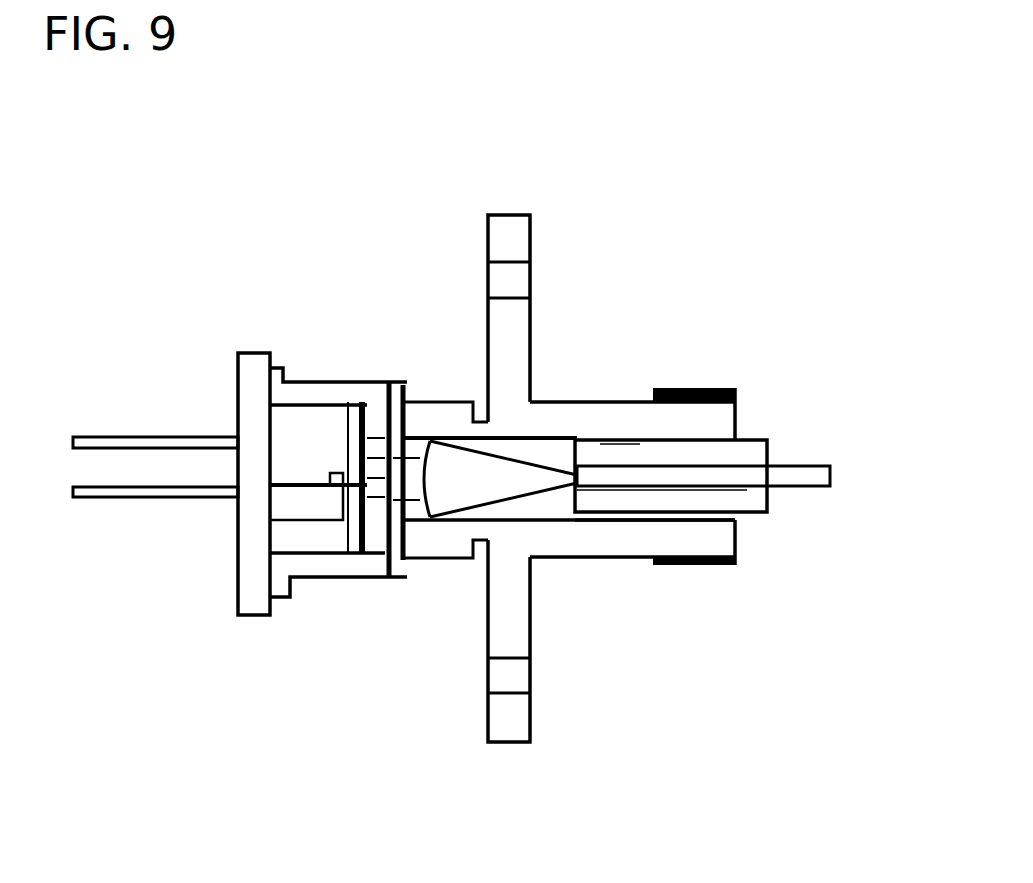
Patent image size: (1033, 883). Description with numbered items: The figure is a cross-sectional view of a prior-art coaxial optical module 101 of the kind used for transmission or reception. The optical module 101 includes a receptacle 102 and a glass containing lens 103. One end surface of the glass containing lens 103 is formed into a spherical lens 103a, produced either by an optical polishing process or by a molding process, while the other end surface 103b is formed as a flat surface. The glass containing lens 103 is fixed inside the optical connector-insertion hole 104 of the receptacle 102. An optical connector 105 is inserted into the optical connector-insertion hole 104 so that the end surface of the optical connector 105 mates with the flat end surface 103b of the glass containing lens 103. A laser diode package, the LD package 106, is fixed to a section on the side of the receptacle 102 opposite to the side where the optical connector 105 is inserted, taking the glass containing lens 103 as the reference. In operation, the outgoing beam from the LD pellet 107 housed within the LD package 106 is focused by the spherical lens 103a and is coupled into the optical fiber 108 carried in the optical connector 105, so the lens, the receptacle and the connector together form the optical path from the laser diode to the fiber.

The optical module 101 is at (155, 138).
The receptacle 102 is at (628, 400).
The glass containing lens 103 is at (545, 525).
The spherical lens 103a is at (420, 520).
The end surface 103b is at (608, 437).
The optical connector-insertion hole 104 is at (675, 508).
The optical connector 105 is at (750, 517).
The LD package 106 is at (307, 403).
The LD pellet 107 is at (337, 477).
The optical fiber 108 is at (637, 443).